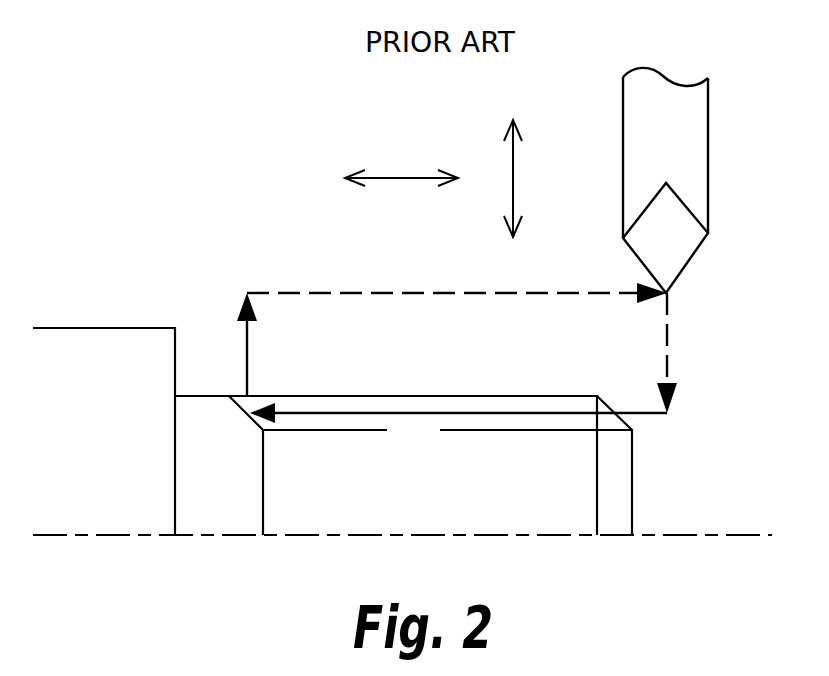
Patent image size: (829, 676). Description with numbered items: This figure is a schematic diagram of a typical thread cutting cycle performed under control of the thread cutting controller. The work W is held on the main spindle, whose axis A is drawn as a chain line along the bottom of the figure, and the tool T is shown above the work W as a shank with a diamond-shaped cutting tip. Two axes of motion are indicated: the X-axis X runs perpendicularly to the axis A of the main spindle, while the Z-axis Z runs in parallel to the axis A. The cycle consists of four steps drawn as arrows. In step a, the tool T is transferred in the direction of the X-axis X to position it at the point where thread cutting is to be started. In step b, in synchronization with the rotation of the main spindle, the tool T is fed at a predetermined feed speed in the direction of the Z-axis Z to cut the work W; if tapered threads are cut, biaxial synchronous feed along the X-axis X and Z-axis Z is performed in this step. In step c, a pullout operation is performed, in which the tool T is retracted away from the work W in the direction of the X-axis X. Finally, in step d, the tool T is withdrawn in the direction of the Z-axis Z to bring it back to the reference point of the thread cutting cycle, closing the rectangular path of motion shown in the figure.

The work W is at (102, 345).
The tool T is at (673, 260).
The axis of the main spindle A is at (737, 533).
The step a is at (679, 353).
The step b is at (458, 430).
The step c is at (234, 344).
The step d is at (457, 277).
The X-axis X is at (526, 178).
The Z-axis Z is at (401, 162).